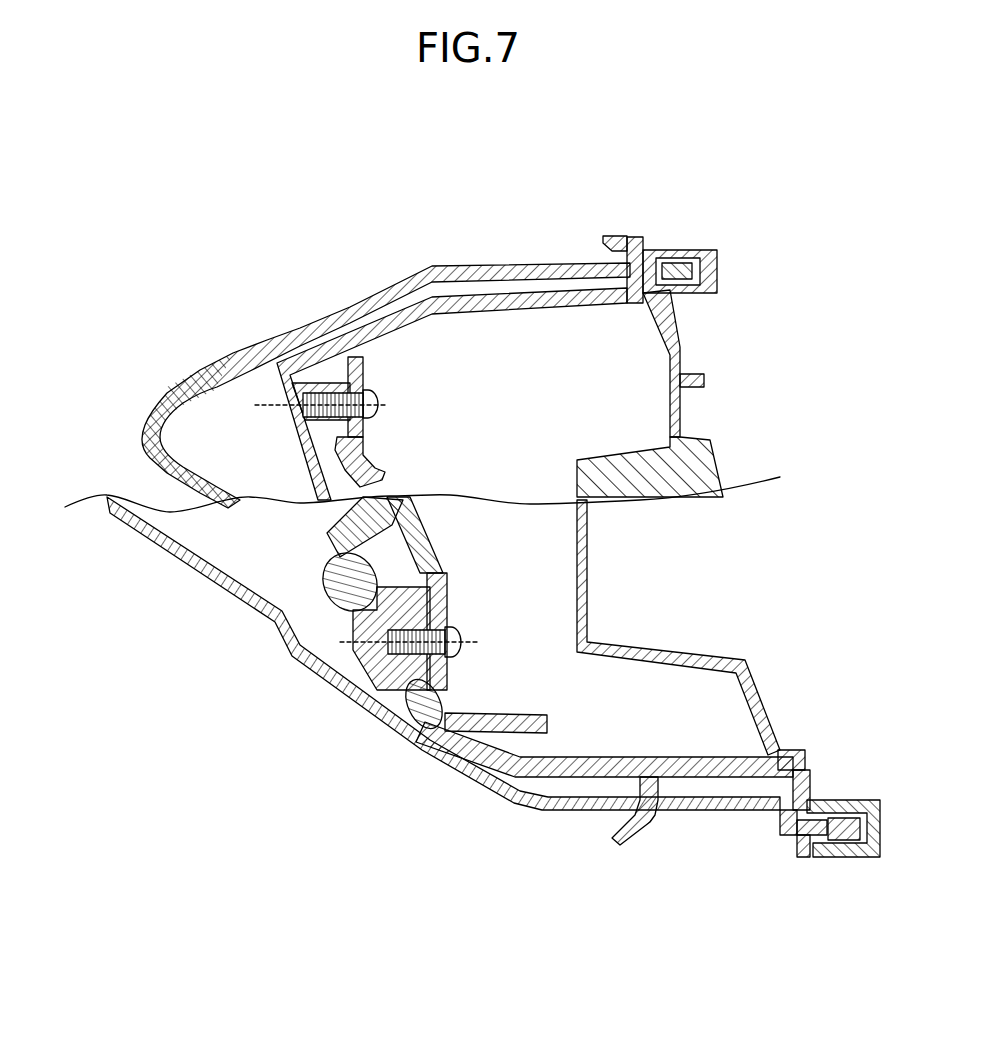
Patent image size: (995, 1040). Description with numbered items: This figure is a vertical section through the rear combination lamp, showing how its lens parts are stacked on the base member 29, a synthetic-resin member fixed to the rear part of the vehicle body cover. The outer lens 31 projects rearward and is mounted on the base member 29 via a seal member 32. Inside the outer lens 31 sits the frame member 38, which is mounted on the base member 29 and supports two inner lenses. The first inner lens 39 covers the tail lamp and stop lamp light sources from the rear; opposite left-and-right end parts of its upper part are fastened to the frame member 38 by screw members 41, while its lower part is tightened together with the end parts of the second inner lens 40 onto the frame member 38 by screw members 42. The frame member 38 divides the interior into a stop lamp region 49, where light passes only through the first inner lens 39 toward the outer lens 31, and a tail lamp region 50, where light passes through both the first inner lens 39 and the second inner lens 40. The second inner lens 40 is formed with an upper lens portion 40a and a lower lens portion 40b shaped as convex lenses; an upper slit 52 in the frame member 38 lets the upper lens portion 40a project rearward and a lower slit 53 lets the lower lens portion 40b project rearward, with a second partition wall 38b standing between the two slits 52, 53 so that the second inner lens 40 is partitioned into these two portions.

The base member 29 is at (682, 357).
The outer lens 31 is at (388, 283).
The seal member 32 is at (703, 250).
The frame member 38 is at (431, 296).
The second partition wall 38b is at (353, 617).
The first inner lens 39 is at (366, 366).
The second inner lens 40 is at (318, 603).
The upper lens portion 40a is at (340, 607).
The lower lens portion 40b is at (410, 722).
The screw member 41 is at (378, 405).
The screw member 42 is at (462, 640).
The stop lamp region 49 is at (250, 442).
The tail lamp region 50 is at (283, 559).
The upper slit 52 is at (405, 557).
The lower slit 53 is at (458, 698).